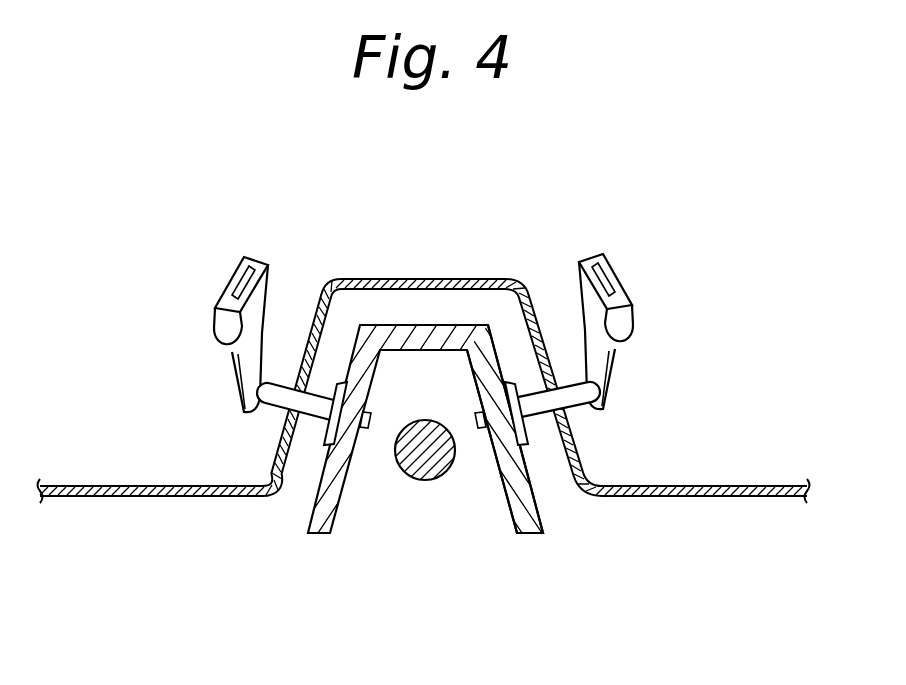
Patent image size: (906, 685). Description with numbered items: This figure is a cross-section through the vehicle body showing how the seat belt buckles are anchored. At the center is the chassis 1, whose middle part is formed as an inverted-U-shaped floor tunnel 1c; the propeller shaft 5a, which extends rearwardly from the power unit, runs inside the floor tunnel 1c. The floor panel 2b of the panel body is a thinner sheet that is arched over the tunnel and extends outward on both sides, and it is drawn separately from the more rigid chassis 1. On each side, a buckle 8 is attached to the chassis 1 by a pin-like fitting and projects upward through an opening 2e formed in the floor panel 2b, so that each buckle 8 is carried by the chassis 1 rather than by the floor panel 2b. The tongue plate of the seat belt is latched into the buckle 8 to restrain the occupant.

The chassis 1 is at (314, 497).
The floor tunnel 1c is at (514, 494).
The floor panel 2b is at (715, 482).
The opening 2e is at (288, 418).
The propeller shaft 5a is at (413, 487).
The buckle 8 is at (223, 322).